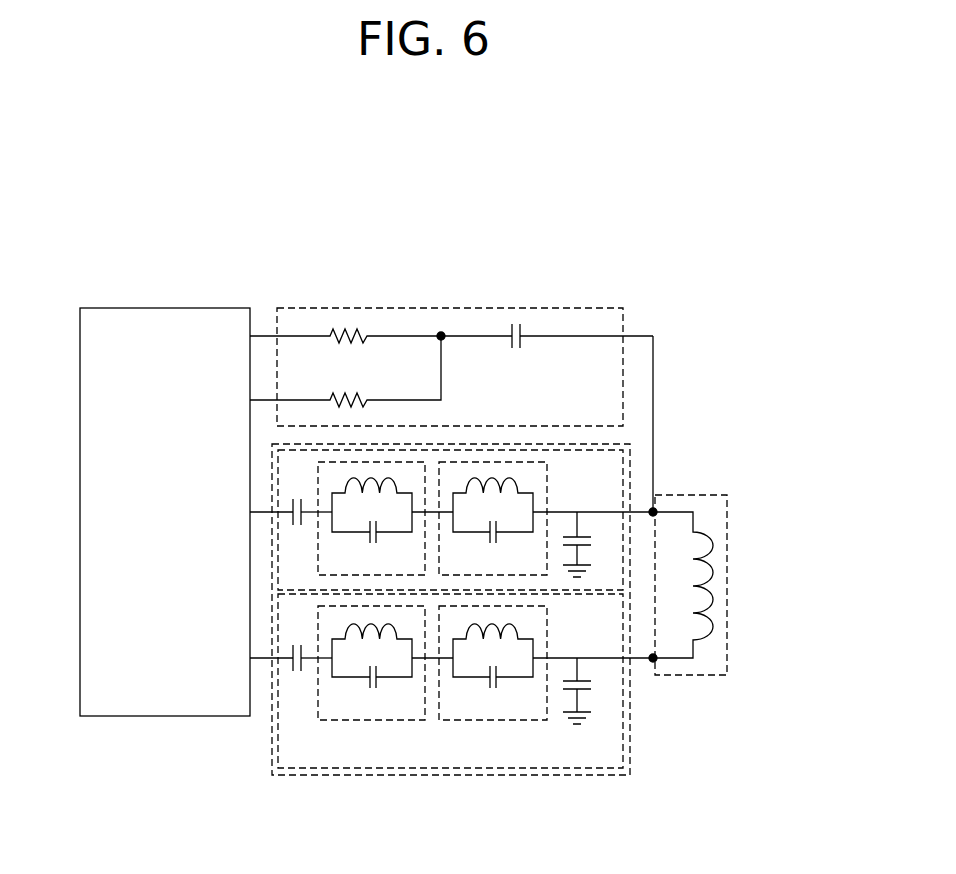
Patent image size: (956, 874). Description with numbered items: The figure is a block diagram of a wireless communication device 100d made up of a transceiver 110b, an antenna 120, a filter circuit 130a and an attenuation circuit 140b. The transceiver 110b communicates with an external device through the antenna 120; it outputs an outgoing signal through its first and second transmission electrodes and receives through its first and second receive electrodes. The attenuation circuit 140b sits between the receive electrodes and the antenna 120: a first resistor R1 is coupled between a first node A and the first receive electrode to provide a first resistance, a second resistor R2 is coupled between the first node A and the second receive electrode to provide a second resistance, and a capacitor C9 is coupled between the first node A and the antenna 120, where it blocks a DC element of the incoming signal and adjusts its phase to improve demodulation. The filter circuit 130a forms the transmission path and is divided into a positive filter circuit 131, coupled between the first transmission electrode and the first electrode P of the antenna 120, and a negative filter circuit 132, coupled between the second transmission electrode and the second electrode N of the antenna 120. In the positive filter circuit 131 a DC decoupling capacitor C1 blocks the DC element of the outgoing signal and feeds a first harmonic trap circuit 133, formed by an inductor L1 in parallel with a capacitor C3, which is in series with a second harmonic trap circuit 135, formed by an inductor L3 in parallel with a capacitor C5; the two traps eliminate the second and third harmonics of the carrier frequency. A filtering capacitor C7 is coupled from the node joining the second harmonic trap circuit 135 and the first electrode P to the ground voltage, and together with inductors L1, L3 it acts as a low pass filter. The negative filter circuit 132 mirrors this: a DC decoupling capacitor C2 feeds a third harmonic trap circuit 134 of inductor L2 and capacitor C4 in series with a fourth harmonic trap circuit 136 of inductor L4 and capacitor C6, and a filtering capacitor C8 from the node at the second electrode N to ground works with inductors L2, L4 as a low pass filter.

The wireless communication device 100d is at (368, 206).
The transceiver 110b is at (163, 307).
The attenuation circuit 140b is at (430, 307).
The filter circuit 130a is at (430, 776).
The positive filter circuit 131 is at (625, 464).
The negative filter circuit 132 is at (630, 750).
The first harmonic trap circuit 133 is at (318, 565).
The third harmonic trap circuit 134 is at (345, 720).
The second harmonic trap circuit 135 is at (548, 463).
The fourth harmonic trap circuit 136 is at (515, 720).
The antenna 120 is at (728, 583).
The first resistor R1 is at (381, 348).
The second resistor R2 is at (345, 371).
The capacitor C9 is at (576, 351).
The first node A is at (444, 339).
The first electrode P is at (656, 516).
The second electrode N is at (656, 662).
The DC decoupling capacitor C1 is at (308, 527).
The DC decoupling capacitor C2 is at (308, 673).
The capacitor C3 is at (372, 543).
The capacitor C4 is at (372, 688).
The capacitor C5 is at (493, 543).
The capacitor C6 is at (493, 688).
The filtering capacitor C7 is at (587, 544).
The filtering capacitor C8 is at (587, 691).
The inductor L1 is at (367, 490).
The inductor L2 is at (367, 636).
The inductor L3 is at (488, 490).
The inductor L4 is at (488, 636).